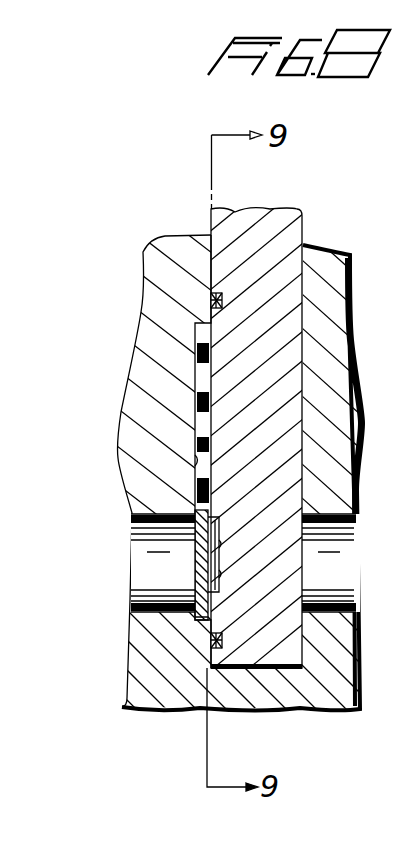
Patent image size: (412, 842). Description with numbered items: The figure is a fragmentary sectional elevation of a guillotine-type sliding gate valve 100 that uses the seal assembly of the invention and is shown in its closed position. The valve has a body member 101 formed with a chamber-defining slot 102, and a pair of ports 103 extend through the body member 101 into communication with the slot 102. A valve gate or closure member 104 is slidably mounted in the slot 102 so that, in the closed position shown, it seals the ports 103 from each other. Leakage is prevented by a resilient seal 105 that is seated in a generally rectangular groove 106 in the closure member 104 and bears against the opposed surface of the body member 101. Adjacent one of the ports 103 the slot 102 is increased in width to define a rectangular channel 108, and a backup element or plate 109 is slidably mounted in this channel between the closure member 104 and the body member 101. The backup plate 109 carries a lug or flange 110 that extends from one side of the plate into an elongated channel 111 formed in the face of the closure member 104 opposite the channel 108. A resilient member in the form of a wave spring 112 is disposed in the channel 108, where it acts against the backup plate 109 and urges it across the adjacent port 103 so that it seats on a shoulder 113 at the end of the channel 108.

The sliding gate valve 100 is at (344, 178).
The body member 101 is at (143, 252).
The slot 102 is at (252, 670).
The ports 103 is at (148, 577).
The closure member 104 is at (243, 210).
The resilient seal 105 is at (217, 293).
The groove 106 is at (223, 301).
The rectangular channel 108 is at (197, 462).
The backup plate 109 is at (194, 540).
The lug 110 is at (222, 534).
The elongated channel 111 is at (220, 576).
The wave spring 112 is at (208, 341).
The shoulder 113 is at (207, 620).